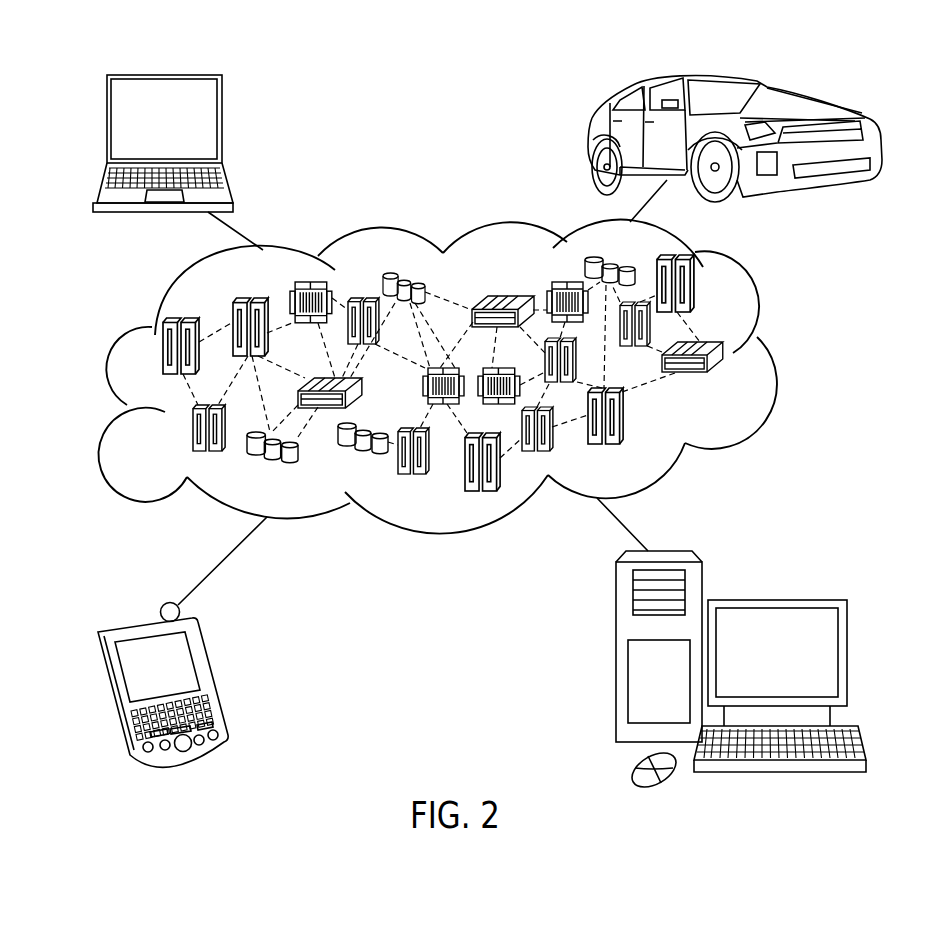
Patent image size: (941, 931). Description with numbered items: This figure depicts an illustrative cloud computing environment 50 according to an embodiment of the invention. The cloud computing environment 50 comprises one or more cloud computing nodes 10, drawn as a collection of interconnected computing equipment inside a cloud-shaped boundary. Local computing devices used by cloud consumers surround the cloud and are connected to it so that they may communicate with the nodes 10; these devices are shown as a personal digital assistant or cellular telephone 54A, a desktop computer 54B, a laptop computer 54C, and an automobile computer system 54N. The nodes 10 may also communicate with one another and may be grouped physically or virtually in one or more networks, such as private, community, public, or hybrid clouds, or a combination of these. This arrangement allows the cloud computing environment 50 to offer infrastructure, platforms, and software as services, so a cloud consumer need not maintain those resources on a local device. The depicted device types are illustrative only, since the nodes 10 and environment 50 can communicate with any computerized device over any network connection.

The cloud computing node 10 is at (727, 381).
The cloud computing environment 50 is at (778, 355).
The personal digital assistant or cellular telephone 54A is at (213, 678).
The desktop computer 54B is at (776, 600).
The laptop computer 54C is at (222, 124).
The automobile computer system 54N is at (590, 138).